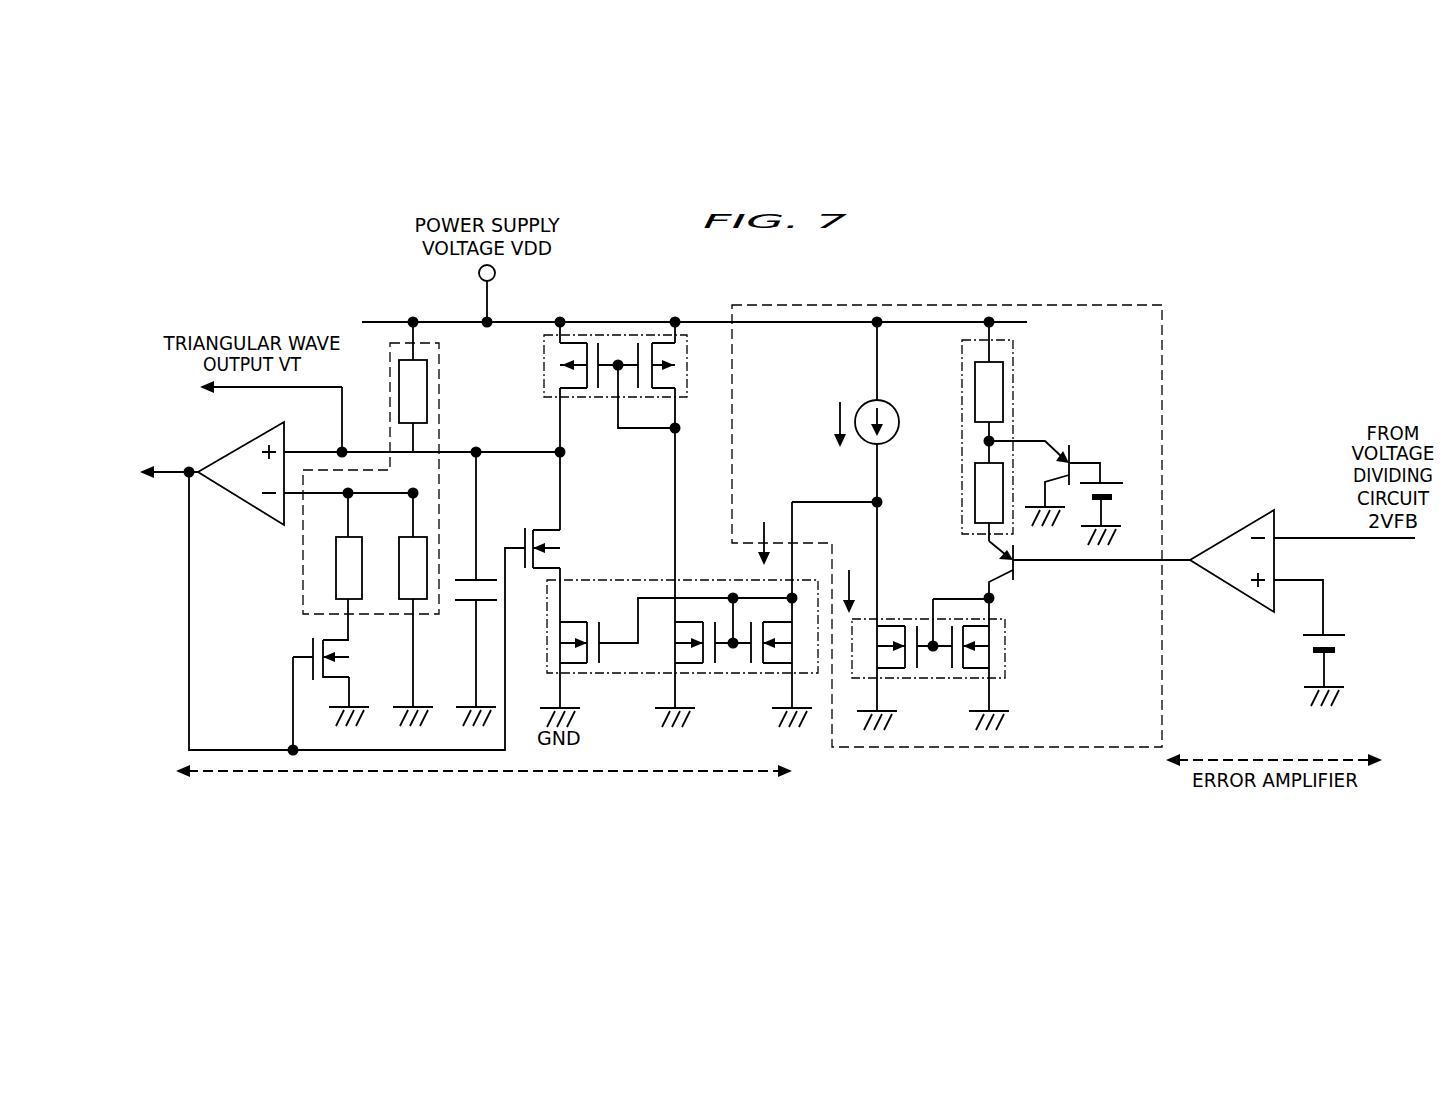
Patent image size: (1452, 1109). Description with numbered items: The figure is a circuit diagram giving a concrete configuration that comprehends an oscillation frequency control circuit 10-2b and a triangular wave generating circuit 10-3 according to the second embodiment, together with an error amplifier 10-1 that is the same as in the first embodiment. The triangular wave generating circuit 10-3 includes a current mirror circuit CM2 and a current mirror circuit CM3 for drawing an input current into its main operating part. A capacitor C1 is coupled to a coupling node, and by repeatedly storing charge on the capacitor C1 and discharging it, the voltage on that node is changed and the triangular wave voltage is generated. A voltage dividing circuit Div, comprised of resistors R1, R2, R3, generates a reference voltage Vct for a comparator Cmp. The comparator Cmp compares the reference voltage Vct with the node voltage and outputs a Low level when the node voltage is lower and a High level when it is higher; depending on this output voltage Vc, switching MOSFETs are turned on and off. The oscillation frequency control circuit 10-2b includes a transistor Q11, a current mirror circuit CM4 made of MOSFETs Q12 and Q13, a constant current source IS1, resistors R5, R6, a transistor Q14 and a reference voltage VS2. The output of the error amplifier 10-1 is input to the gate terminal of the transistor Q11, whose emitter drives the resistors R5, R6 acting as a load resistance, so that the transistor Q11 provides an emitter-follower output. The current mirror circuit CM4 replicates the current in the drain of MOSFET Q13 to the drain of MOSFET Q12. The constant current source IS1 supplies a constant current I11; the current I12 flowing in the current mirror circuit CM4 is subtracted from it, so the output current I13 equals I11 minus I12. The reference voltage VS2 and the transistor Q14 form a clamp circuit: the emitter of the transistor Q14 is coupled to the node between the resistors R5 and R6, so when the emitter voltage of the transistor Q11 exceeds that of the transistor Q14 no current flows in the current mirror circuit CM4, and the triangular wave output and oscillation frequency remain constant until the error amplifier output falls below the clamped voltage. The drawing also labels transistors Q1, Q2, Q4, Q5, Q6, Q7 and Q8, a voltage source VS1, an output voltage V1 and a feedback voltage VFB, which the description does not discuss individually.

The error amplifier 10-1 is at (1240, 520).
The oscillation frequency control circuit 10-2b is at (1162, 322).
The triangular wave generating circuit 10-3 is at (500, 808).
The comparator Cmp is at (228, 456).
The output voltage of the comparator Vc is at (169, 485).
The reference voltage Vct is at (296, 496).
The voltage dividing circuit Div is at (440, 420).
The resistor R1 is at (392, 387).
The resistor R2 is at (399, 609).
The resistor R3 is at (334, 566).
The capacitor C1 is at (471, 589).
The transistor Q1 is at (323, 674).
The transistor Q2 is at (537, 537).
The transistor Q4 is at (554, 387).
The transistor Q5 is at (677, 472).
The transistor Q6 is at (556, 674).
The transistor Q7 is at (679, 674).
The transistor Q8 is at (732, 676).
The transistor Q11 is at (981, 569).
The MOSFET Q12 is at (889, 616).
The MOSFET Q13 is at (1001, 664).
The transistor Q14 is at (1044, 469).
The current mirror circuit CM2 is at (682, 616).
The current mirror circuit CM3 is at (614, 472).
The current mirror circuit CM4 is at (951, 616).
The constant current source IS1 is at (894, 398).
The constant current I11 is at (839, 411).
The current flowing in the current mirror circuit I12 is at (849, 579).
The output current I13 is at (764, 530).
The resistor R5 is at (966, 502).
The resistor R6 is at (971, 428).
The voltage source VS1 is at (1333, 643).
The reference voltage VS2 is at (1112, 503).
The error amplifier output voltage V1 is at (1178, 546).
The feedback voltage VFB is at (1298, 523).